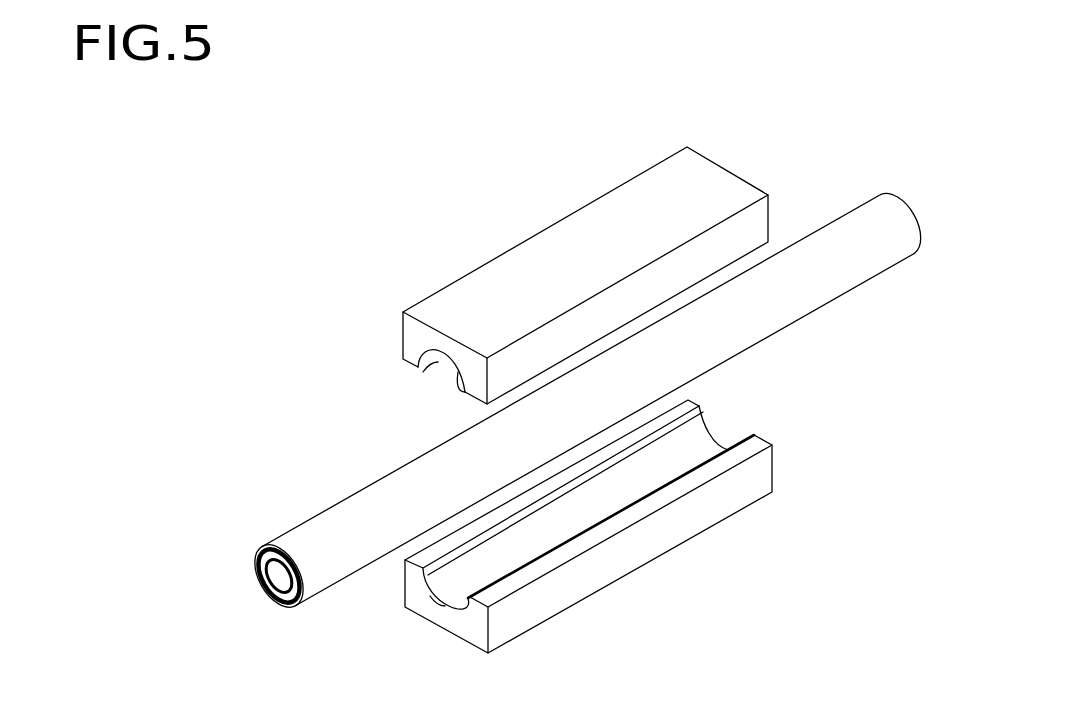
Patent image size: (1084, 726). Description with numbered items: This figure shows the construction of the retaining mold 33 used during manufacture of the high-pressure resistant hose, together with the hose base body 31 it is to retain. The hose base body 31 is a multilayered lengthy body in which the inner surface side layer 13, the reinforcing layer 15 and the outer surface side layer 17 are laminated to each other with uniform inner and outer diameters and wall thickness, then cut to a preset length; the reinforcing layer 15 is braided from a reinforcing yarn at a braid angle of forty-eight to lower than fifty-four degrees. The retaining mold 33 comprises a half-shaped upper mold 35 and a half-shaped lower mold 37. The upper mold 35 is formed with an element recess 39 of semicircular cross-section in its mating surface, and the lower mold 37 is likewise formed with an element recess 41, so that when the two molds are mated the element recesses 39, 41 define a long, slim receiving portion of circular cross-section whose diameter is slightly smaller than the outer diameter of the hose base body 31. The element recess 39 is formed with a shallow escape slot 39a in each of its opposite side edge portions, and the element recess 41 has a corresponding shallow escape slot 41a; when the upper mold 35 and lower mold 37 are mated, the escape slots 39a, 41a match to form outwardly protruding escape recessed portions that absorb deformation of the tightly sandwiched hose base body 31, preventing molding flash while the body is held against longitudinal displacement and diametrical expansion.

The inner surface side layer 13 is at (263, 568).
The reinforcing layer 15 is at (262, 548).
The outer surface side layer 17 is at (292, 541).
The hose base body 31 is at (552, 404).
The retaining mold 33 is at (466, 242).
The upper mold 35 is at (540, 272).
The lower mold 37 is at (553, 545).
The element recess 39 is at (435, 357).
The escape slot 39a is at (461, 375).
The element recess 41 is at (432, 594).
The escape slot 41a is at (447, 549).